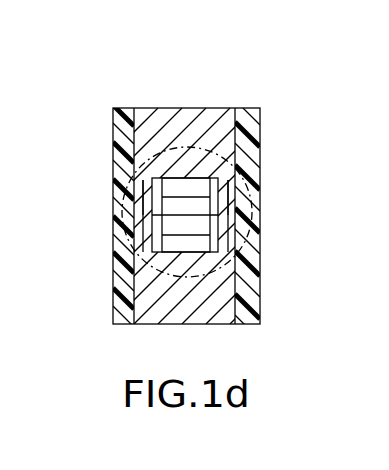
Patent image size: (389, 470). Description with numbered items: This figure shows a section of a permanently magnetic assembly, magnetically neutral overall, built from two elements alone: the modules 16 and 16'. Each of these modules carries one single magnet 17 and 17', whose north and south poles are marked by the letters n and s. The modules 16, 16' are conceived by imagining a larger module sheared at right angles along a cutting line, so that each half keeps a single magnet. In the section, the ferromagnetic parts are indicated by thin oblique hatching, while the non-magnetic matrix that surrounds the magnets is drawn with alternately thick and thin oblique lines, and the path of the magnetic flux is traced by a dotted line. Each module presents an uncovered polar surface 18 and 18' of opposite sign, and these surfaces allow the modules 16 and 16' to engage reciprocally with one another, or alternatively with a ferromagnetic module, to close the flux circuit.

The module 16 is at (194, 225).
The module 16' is at (76, 58).
The magnet 17 is at (234, 229).
The magnet 17' is at (279, 174).
The uncovered polar surface 18 is at (105, 230).
The uncovered polar surface 18' is at (100, 173).